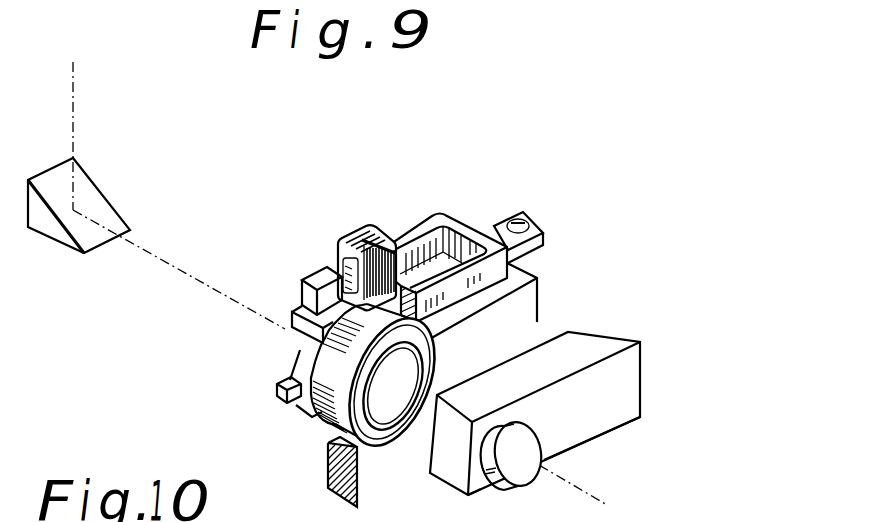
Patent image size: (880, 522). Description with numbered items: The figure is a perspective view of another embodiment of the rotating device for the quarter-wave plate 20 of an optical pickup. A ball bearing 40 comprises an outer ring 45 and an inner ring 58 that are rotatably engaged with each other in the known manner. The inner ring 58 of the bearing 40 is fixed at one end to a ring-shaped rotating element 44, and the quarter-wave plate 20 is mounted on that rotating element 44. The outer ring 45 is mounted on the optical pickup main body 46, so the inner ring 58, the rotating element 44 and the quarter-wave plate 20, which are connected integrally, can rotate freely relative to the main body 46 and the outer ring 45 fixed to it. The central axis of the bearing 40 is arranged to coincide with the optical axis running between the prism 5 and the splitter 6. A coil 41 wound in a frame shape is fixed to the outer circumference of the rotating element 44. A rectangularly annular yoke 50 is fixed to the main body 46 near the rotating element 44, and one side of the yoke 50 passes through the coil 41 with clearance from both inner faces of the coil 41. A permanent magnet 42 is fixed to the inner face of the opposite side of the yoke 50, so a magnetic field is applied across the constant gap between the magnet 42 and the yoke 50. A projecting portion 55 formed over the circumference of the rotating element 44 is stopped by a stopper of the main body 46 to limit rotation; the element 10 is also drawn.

The splitter 6 is at (100, 195).
The coil 41 is at (358, 225).
The rectangularly annular yoke 50 is at (413, 232).
The permanent magnet 42 is at (468, 250).
The optical pickup main body 46 is at (537, 297).
The λ/4 plate 20 is at (338, 402).
The projecting portion 55 is at (277, 395).
The rotating element 44 is at (303, 414).
The outer ring 45 is at (336, 414).
The ball bearing 40 is at (333, 466).
The inner ring 58 is at (383, 432).
The prism 5 is at (453, 473).
The knob 10 is at (515, 470).